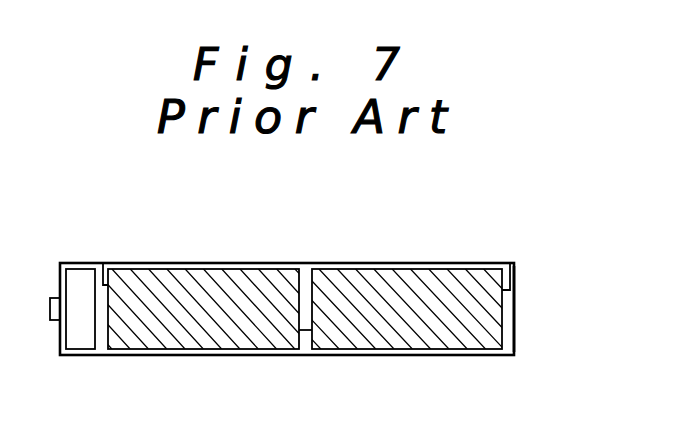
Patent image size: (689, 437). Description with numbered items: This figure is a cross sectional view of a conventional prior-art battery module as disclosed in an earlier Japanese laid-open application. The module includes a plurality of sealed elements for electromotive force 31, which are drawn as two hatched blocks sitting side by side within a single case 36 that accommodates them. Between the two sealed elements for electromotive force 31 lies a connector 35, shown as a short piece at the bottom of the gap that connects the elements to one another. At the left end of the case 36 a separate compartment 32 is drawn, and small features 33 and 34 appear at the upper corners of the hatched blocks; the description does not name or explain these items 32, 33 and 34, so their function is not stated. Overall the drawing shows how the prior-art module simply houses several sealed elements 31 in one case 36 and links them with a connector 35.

The sealed elements for electromotive force 31 is at (365, 300).
The circuit board 32 is at (82, 337).
The connection tab 33 is at (100, 263).
The connection tab 34 is at (505, 265).
The connector 35 is at (304, 335).
The case 36 is at (516, 278).